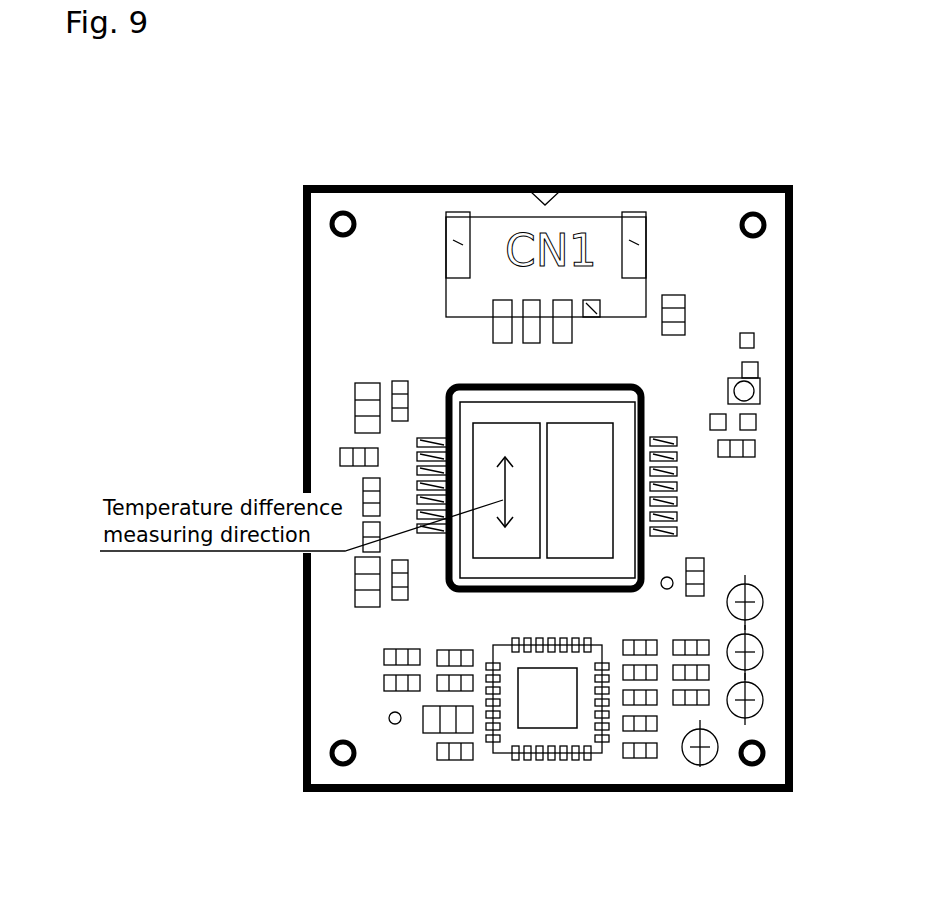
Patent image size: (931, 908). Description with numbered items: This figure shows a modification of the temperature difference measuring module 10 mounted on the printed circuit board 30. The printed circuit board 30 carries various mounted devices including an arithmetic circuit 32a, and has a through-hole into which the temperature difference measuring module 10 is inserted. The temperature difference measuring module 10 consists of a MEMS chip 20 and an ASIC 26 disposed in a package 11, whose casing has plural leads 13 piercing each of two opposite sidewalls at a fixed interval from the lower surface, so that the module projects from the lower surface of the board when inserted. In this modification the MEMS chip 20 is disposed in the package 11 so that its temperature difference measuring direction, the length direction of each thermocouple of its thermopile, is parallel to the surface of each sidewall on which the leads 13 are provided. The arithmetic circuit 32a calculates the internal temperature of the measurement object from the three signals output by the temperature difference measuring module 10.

The printed circuit board 30 is at (757, 183).
The temperature difference measuring module 10 is at (585, 458).
The package 11 is at (547, 490).
The MEMS chip 20 is at (519, 435).
The ASIC 26 is at (595, 437).
The leads 13 is at (670, 440).
The arithmetic circuit 32a is at (550, 717).